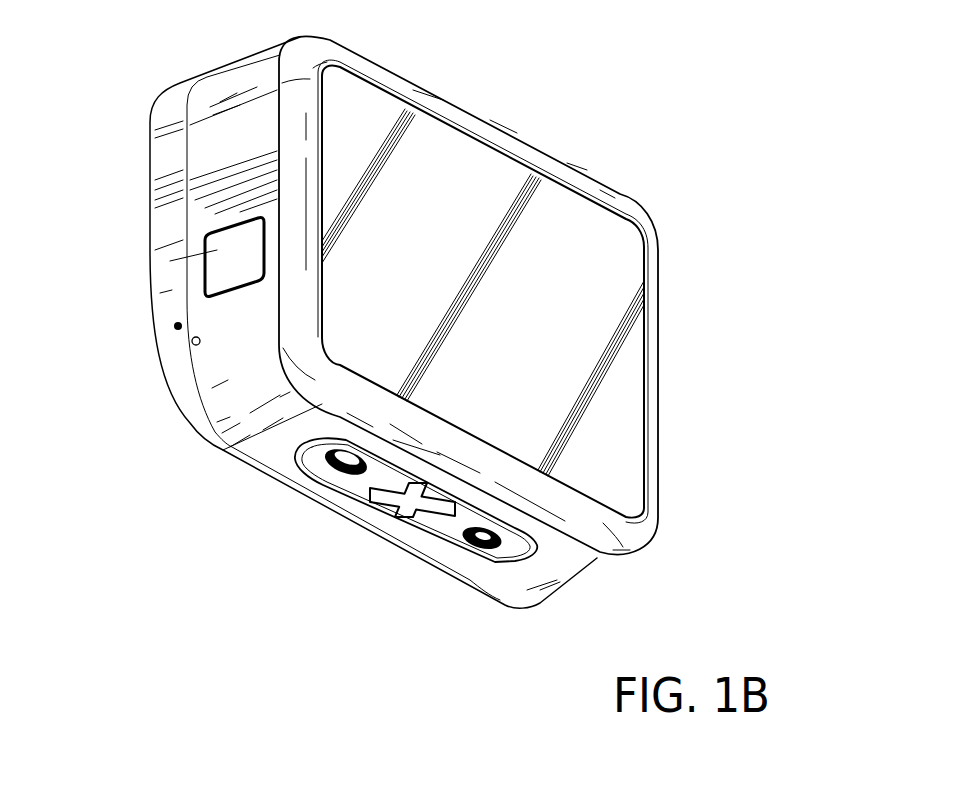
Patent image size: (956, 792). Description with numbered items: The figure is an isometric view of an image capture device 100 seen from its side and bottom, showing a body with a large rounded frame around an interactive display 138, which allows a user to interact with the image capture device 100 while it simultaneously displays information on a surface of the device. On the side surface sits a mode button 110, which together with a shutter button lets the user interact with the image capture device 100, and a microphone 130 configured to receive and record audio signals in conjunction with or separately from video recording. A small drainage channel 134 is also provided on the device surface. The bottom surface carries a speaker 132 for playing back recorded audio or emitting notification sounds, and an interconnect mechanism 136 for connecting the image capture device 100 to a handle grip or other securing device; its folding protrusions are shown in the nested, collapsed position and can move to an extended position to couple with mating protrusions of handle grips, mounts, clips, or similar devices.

The image capture device 100 is at (650, 112).
The mode button 110 is at (217, 263).
The microphone 130 is at (191, 342).
The speaker 132 is at (483, 548).
The drainage channel 134 is at (172, 326).
The interconnect mechanism 136 is at (350, 483).
The interactive display 138 is at (617, 413).